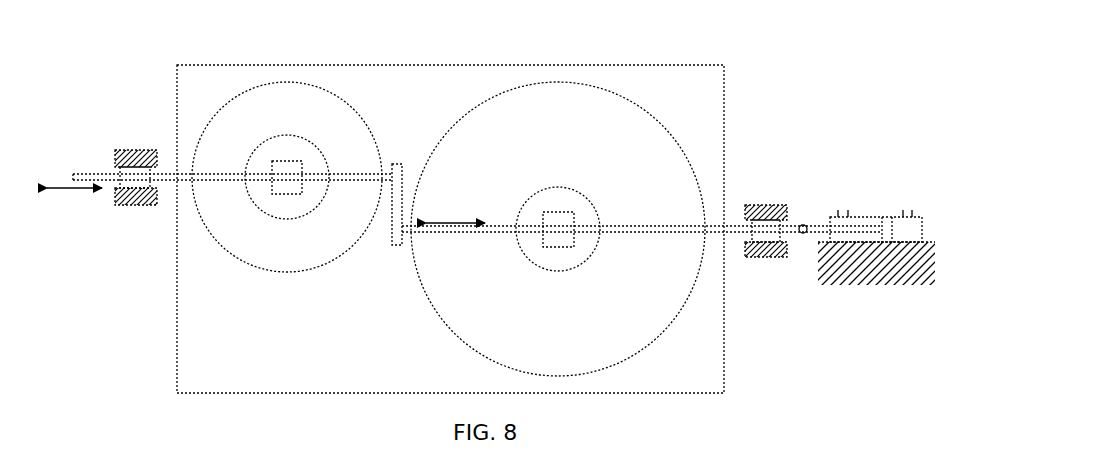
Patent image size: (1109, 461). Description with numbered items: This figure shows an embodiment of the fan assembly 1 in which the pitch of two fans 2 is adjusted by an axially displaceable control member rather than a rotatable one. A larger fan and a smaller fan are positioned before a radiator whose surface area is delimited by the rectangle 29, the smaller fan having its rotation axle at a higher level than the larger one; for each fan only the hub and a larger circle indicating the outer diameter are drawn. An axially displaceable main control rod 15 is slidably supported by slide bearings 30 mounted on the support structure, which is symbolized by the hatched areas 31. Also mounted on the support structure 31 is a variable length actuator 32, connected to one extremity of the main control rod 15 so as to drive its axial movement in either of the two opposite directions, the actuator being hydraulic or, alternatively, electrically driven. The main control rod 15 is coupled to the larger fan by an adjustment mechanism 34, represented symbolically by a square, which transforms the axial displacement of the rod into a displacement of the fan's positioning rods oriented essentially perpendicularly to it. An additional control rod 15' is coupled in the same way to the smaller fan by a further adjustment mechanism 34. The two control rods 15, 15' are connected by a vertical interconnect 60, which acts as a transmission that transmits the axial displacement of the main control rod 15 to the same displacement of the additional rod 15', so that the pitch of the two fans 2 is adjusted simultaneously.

The machine 1 is at (137, 63).
The fan 2 is at (287, 93).
The main control rod 15 is at (642, 164).
The additional control rod 15' is at (219, 109).
The rectangle 29 is at (724, 65).
The slide bearing 30 is at (125, 172).
The hatched area 31 is at (138, 152).
The variable length actuator 32 is at (881, 218).
The adjustment mechanism 34 is at (288, 185).
The vertical interconnect 60 is at (397, 242).